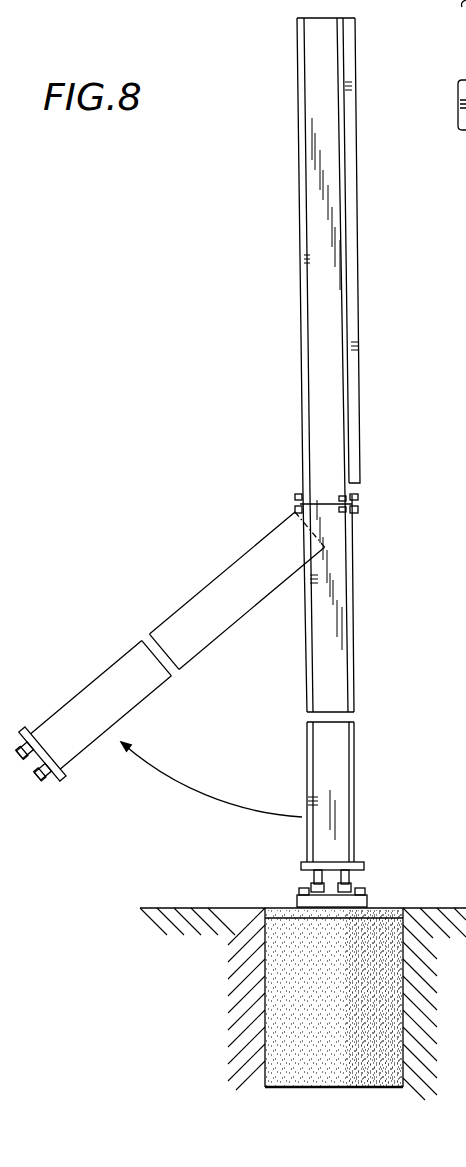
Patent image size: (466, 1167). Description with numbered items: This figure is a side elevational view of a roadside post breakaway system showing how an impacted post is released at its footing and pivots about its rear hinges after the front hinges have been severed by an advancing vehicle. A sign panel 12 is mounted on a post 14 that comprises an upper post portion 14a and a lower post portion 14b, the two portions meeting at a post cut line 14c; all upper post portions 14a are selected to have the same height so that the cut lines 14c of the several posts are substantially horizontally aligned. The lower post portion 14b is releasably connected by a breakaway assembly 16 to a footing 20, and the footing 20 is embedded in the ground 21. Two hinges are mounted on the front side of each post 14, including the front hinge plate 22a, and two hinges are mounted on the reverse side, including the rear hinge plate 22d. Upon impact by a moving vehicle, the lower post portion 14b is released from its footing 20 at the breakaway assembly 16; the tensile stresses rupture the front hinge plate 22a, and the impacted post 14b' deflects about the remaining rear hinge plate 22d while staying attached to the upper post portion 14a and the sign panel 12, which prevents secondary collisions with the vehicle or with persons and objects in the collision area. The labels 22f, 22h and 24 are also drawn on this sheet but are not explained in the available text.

The sign panel 12 is at (358, 257).
The post 14 is at (359, 637).
The upper post portion 14a is at (325, 203).
The lower post portion 14b is at (361, 792).
The impacted post 14b' is at (170, 664).
The post cut line 14c is at (449, 286).
The breakaway assembly 16 is at (386, 872).
The footing 20 is at (277, 993).
The ground 21 is at (202, 965).
The front hinge plate 22a is at (364, 511).
The rear hinge plate 22d is at (290, 492).
The hinge element 22f is at (465, 150).
The hinge element 22h is at (465, 28).
The latch device 24 is at (458, 118).